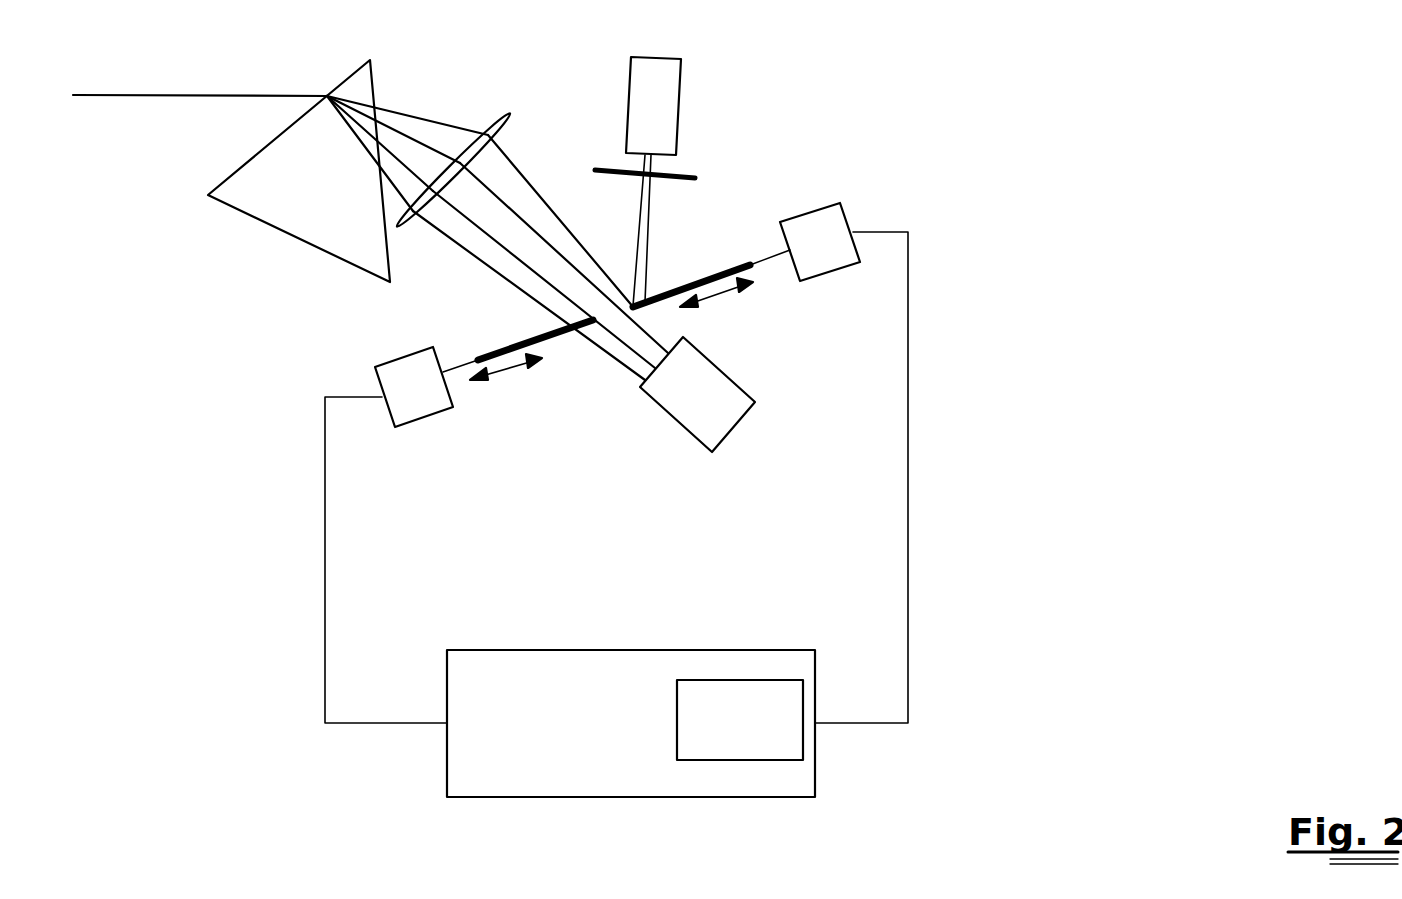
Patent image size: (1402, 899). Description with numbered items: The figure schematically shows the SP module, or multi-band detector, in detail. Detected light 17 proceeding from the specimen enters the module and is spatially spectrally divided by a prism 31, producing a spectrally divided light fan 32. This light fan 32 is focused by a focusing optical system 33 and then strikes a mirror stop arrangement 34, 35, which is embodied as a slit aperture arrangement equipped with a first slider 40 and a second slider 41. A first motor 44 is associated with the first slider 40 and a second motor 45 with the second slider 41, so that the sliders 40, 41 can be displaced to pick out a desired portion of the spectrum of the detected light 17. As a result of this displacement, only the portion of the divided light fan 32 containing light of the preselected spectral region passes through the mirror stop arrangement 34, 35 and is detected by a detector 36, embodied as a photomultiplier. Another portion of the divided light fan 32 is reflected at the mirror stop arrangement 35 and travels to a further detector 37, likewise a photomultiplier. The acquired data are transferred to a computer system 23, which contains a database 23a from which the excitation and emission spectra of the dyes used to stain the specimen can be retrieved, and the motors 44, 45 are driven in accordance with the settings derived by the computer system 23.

The detected light 17 is at (160, 95).
The computer system 23 is at (640, 734).
The database 23a is at (757, 743).
The prism 31 is at (300, 230).
The spectrally divided light fan 32 is at (403, 118).
The focusing optical system 33 is at (495, 122).
The mirror stop arrangement 34 is at (493, 355).
The mirror stop arrangement 35 is at (690, 283).
The detector 36 is at (691, 417).
The detector 37 is at (660, 100).
The first slider 40 is at (580, 330).
The second slider 41 is at (672, 307).
The first motor 44 is at (388, 377).
The second motor 45 is at (827, 213).